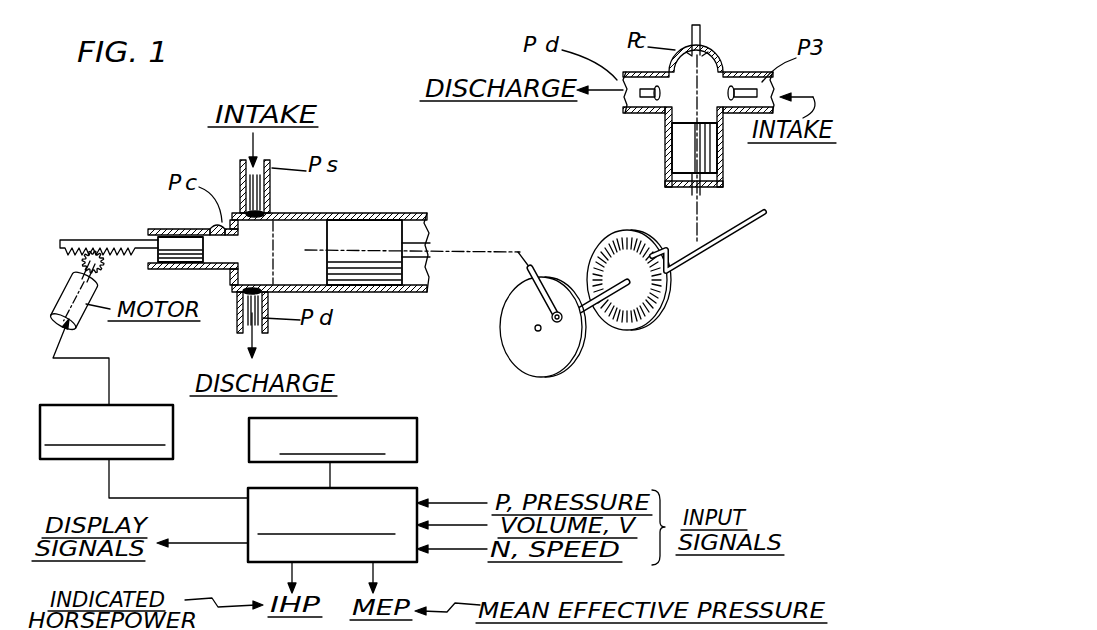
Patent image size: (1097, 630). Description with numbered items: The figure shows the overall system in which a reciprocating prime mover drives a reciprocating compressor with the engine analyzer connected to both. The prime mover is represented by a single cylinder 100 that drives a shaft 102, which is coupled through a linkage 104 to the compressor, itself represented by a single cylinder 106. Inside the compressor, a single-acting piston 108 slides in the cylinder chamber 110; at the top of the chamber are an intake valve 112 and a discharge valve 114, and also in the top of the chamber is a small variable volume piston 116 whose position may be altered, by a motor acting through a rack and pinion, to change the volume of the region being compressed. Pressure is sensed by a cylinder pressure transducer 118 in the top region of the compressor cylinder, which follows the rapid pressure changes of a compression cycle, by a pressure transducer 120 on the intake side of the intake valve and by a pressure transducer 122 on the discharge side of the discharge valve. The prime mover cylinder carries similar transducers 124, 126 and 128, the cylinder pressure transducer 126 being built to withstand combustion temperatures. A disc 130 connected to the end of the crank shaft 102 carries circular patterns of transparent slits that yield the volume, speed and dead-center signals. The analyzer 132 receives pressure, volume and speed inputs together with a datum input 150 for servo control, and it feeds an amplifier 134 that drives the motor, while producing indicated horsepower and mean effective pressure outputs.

The cylinder 100 is at (697, 52).
The shaft 102 is at (745, 219).
The linkage 104 is at (485, 252).
The cylinder 106 is at (377, 213).
The piston 108 is at (383, 282).
The cylinder chamber 110 is at (298, 230).
The intake valve 112 is at (236, 213).
The discharge valve 114 is at (240, 319).
The variable volume piston 116 is at (153, 230).
The pressure transducer 118 is at (213, 233).
The pressure transducer 120 is at (267, 162).
The pressure transducer 122 is at (270, 330).
The pressure transducer 124 is at (622, 86).
The cylinder pressure transducer 126 is at (686, 50).
The pressure transducer 128 is at (745, 82).
The disc 130 is at (630, 230).
The analyzer 132 is at (407, 496).
The amplifier 134 is at (158, 448).
The datum input 150 is at (404, 421).